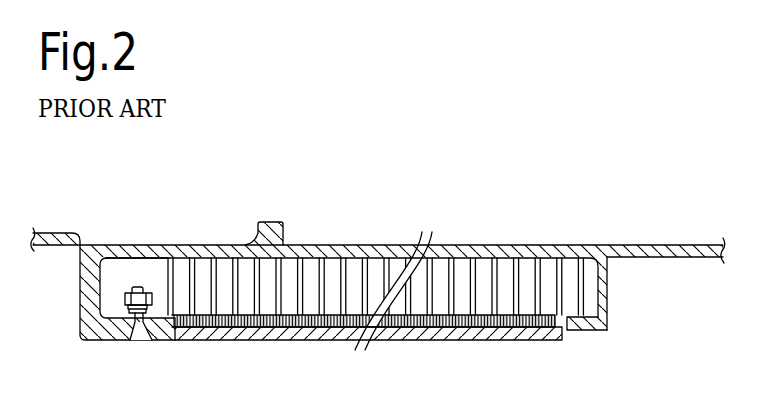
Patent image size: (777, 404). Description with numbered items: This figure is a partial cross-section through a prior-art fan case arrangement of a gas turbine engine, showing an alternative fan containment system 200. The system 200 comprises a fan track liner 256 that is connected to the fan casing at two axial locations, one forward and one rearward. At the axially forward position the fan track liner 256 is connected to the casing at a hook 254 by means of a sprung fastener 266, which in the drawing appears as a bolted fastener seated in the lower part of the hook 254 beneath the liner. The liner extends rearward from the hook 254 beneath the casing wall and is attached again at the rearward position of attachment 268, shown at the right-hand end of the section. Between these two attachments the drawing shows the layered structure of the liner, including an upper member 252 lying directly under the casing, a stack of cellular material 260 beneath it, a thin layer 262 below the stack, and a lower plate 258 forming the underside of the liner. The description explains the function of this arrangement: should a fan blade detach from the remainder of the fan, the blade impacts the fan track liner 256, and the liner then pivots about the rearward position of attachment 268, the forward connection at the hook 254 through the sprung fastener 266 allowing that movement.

The fan containment system 200 is at (512, 133).
The cover plate 252 is at (170, 244).
The hook 254 is at (92, 334).
The fan track liner 256 is at (134, 247).
The bottom plate 258 is at (229, 341).
The cell stack 260 is at (318, 292).
The insulating layer 262 is at (265, 326).
The sprung fastener 266 is at (139, 341).
The rearward position of attachment 268 is at (581, 324).